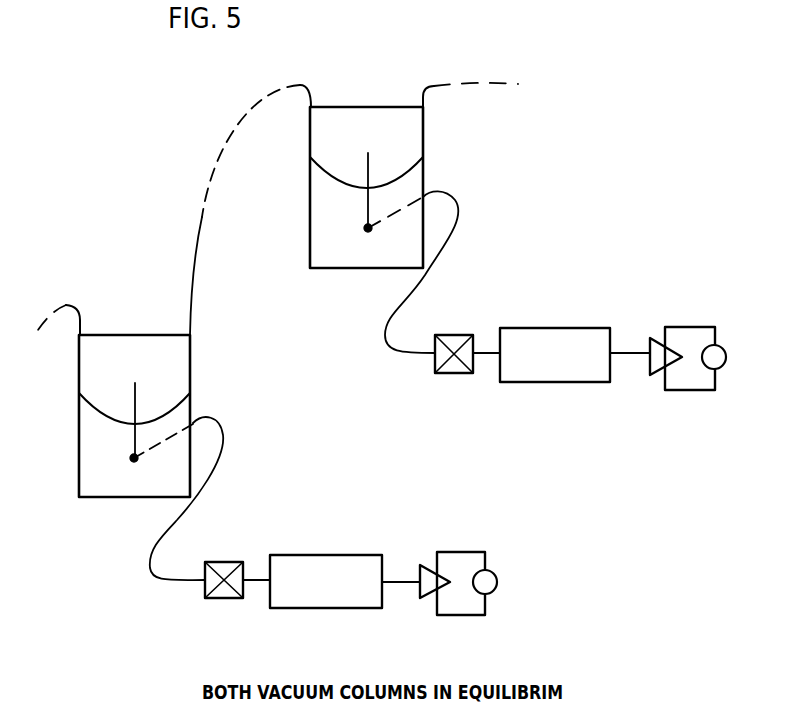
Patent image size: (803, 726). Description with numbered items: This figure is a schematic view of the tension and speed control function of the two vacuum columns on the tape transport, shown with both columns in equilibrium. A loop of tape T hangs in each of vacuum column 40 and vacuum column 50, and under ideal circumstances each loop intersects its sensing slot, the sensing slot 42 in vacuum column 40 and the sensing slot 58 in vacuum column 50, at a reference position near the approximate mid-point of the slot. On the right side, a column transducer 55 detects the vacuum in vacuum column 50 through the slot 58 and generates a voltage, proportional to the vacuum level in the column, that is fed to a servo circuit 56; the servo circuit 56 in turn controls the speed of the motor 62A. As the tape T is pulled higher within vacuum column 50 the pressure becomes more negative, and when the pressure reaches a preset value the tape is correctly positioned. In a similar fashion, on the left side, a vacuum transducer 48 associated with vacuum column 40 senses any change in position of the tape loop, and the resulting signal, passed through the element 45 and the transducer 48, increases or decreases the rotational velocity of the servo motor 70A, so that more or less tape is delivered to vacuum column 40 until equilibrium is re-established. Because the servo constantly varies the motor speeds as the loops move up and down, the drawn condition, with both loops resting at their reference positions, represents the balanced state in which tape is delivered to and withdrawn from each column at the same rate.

The tape T is at (220, 155).
The vacuum column 40 is at (121, 335).
The sensing slot 42 is at (135, 400).
The valve 45 is at (224, 598).
The vacuum transducer 48 is at (330, 608).
The vacuum column 50 is at (365, 107).
The column transducer 55 is at (450, 335).
The servo circuit 56 is at (552, 328).
The sensing slot 58 is at (368, 208).
The motor 62A is at (722, 351).
The servo motor 70A is at (494, 592).